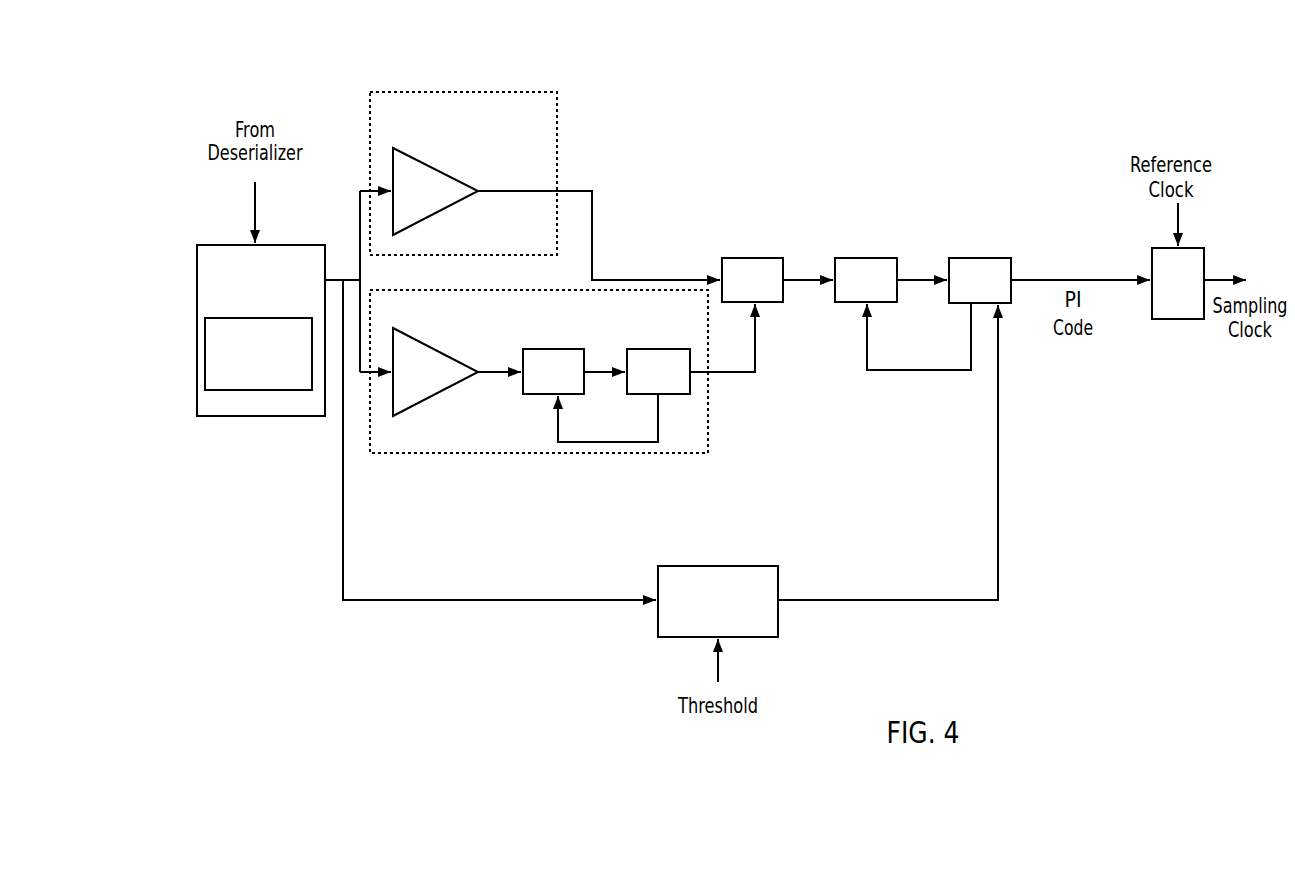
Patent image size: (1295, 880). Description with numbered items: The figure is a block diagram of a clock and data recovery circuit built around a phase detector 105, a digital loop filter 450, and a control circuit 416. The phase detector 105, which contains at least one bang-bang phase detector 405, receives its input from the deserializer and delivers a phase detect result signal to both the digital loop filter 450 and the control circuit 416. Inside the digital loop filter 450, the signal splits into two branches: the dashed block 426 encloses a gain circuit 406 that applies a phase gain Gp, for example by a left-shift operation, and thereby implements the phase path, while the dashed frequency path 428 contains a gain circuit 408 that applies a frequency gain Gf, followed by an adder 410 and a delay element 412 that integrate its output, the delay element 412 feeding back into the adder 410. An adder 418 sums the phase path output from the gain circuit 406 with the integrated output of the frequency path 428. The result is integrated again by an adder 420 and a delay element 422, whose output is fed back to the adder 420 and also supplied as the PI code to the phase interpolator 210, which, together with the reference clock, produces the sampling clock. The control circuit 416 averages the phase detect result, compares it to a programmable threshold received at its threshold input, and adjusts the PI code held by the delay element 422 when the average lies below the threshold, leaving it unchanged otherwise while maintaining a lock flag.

The phase detector 105 is at (313, 302).
The bang-bang phase detector 405 is at (298, 379).
The gain circuit 406 is at (419, 155).
The gain circuit 408 is at (432, 345).
The adder 410 is at (551, 349).
The delay element 412 is at (657, 349).
The control circuit 416 is at (763, 624).
The adder 418 is at (739, 258).
The adder 420 is at (851, 258).
The delay element 422 is at (971, 258).
The proportional path 426 is at (541, 92).
The frequency path 428 is at (482, 455).
The digital loop filter 450 is at (826, 105).
The phase interpolator 210 is at (1163, 307).